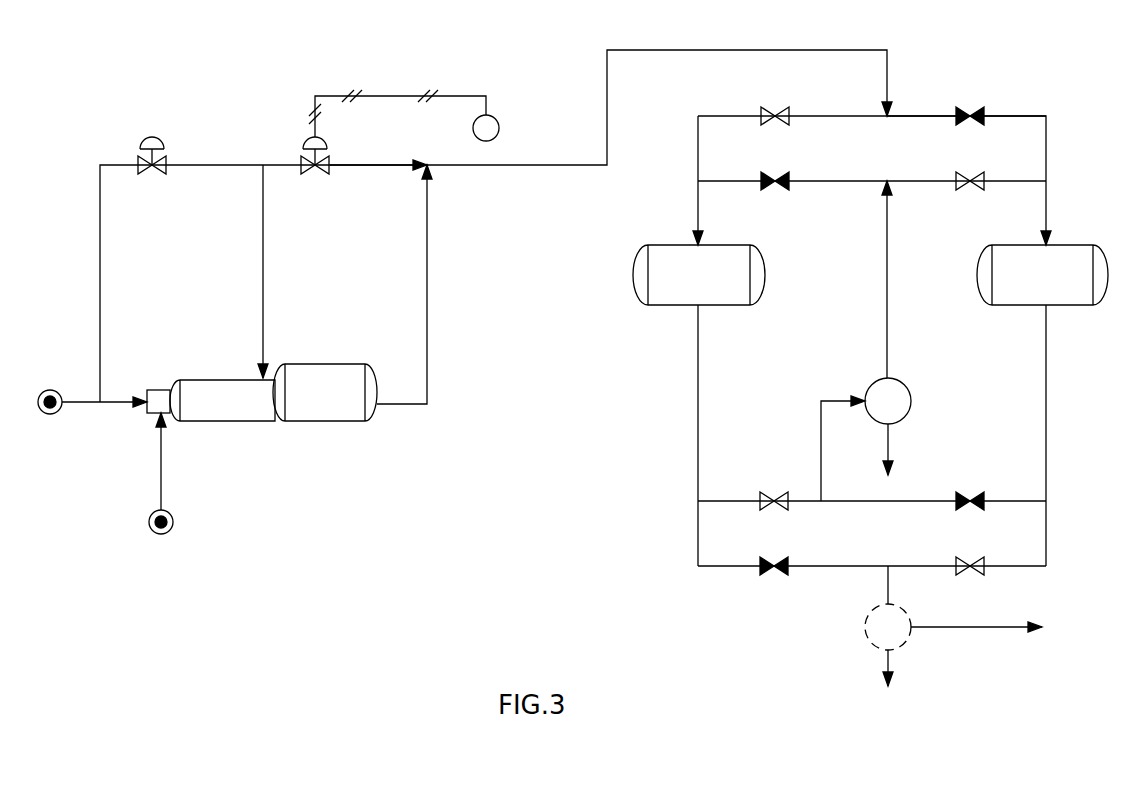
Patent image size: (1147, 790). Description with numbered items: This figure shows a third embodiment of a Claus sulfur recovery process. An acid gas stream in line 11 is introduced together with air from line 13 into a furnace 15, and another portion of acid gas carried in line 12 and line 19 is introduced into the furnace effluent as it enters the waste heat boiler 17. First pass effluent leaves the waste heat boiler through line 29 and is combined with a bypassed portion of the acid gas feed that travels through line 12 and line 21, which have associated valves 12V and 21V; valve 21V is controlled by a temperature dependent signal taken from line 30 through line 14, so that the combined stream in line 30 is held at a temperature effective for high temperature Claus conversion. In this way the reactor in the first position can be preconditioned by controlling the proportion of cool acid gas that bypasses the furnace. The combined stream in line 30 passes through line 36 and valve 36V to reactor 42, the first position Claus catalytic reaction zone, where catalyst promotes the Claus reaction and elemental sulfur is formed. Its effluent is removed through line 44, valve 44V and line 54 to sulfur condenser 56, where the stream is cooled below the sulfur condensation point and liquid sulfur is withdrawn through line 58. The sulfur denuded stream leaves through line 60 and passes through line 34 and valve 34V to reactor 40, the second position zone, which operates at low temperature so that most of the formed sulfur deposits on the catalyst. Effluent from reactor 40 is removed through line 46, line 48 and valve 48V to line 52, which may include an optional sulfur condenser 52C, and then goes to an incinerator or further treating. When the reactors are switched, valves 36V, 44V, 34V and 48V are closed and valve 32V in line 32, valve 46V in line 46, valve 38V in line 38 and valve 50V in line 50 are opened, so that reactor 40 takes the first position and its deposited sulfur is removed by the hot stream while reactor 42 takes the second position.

The acid gas line 11 is at (93, 402).
The acid gas bypass line 12 is at (100, 330).
The bypass valve 12V is at (155, 173).
The air line 13 is at (161, 478).
The signal line 14 is at (373, 96).
The furnace 15 is at (207, 421).
The waste heat boiler 17 is at (337, 421).
The acid gas line to furnace outlet 19 is at (263, 352).
The bypass line 21 is at (355, 165).
The bypass control valve 21V is at (315, 175).
The waste heat boiler effluent line 29 is at (427, 375).
The combined stream line 30 is at (524, 163).
The line to reactor R2 32 is at (907, 116).
The valve in line 32 32V is at (975, 108).
The line to reactor R2 34 is at (928, 181).
The valve in line 34 34V is at (970, 190).
The line to reactor R1 36 is at (813, 116).
The valve in line 36 36V is at (775, 124).
The line to reactor R1 38 is at (813, 181).
The valve in line 38 38V is at (775, 173).
The reactor R2 40 is at (1067, 245).
The reactor R1 42 is at (765, 280).
The reactor R1 outlet line 44 is at (698, 405).
The valve in line 44 44V is at (772, 490).
The reactor R2 outlet line 46 is at (1046, 420).
The valve in line 46 46V is at (975, 492).
The line to incinerator 48 is at (1046, 540).
The valve in line 48 48V is at (965, 556).
The line to incinerator 50 is at (710, 566).
The valve in line 50 50V is at (779, 560).
The effluent line 52 is at (962, 627).
The optional sulfur condenser 52C is at (866, 630).
The line to sulfur condenser 54 is at (820, 432).
The sulfur condenser 56 is at (910, 401).
The liquid sulfur line 58 is at (892, 440).
The condenser effluent line 60 is at (887, 305).